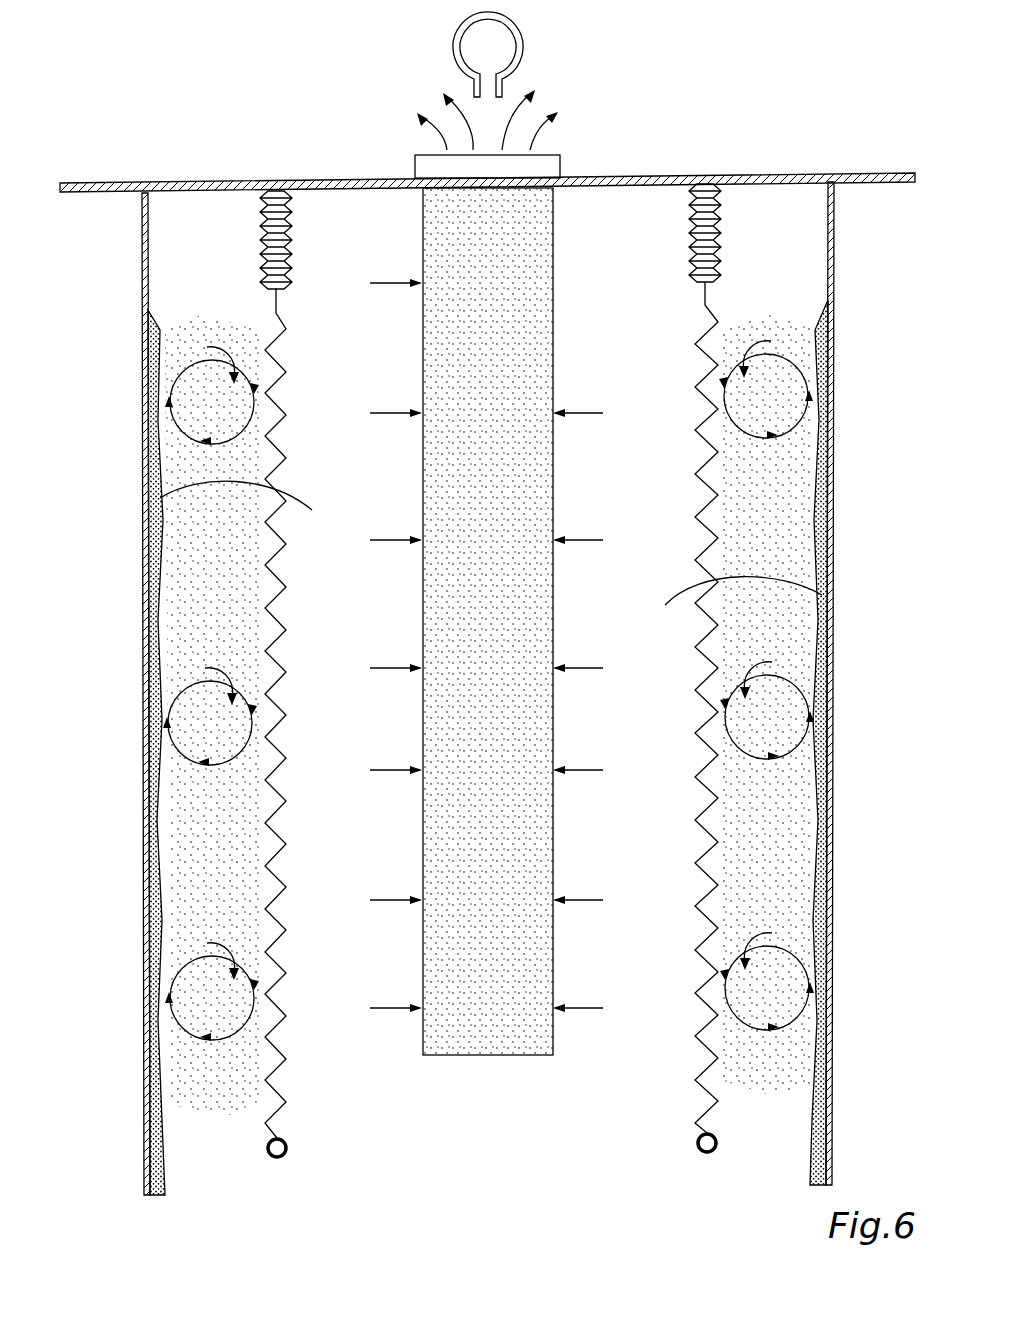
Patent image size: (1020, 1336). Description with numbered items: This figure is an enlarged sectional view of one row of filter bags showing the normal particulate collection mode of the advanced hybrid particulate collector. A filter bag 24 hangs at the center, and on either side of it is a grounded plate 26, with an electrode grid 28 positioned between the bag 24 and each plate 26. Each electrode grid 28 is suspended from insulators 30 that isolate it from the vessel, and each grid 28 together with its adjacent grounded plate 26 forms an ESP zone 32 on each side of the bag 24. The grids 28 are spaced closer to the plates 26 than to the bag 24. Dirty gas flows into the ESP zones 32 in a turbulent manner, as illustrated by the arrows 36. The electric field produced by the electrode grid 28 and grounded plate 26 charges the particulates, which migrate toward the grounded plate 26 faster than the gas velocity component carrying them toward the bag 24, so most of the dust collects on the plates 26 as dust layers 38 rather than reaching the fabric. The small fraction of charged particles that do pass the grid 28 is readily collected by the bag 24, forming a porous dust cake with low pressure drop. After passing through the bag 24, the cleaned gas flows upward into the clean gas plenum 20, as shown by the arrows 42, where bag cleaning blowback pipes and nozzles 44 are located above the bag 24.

The clean gas plenum 20 is at (718, 90).
The filter bag 24 is at (569, 259).
The grounded plate 26 is at (147, 372).
The electrode grid 28 is at (282, 447).
The insulator 30 is at (262, 222).
The ESP zone 32 is at (186, 264).
The arrows 36 is at (220, 668).
The dust layer 38 is at (491, 549).
The arrows 42 is at (547, 129).
The bag cleaning blowback pipes and nozzles 44 is at (455, 42).